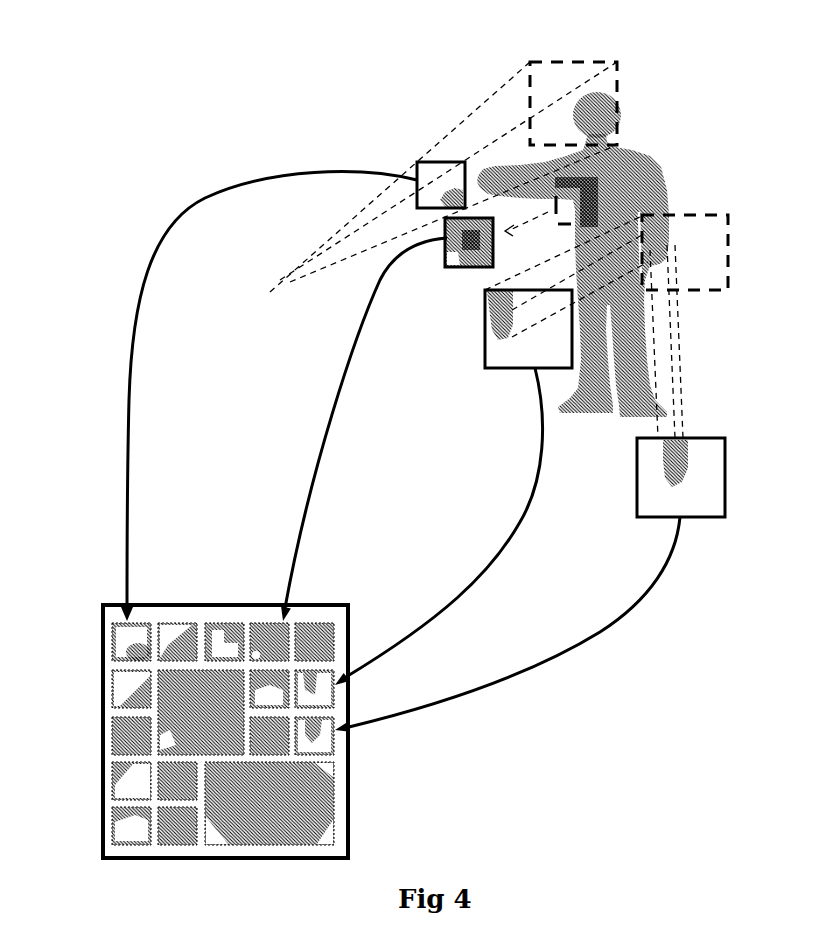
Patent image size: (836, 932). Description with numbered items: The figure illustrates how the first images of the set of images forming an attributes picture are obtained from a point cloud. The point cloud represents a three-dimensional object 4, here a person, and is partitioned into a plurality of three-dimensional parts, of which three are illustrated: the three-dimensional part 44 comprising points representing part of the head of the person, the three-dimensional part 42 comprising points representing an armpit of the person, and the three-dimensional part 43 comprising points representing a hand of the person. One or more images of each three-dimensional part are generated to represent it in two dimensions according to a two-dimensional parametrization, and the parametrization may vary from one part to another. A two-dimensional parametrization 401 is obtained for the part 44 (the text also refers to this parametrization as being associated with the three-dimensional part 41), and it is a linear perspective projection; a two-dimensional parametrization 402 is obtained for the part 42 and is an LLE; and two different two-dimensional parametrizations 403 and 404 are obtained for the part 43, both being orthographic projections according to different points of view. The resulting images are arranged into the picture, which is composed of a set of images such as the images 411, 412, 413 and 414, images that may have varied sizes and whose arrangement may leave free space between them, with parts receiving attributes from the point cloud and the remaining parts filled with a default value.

The 3D object 4 is at (645, 158).
The 3D part 41 is at (249, 684).
The first grid cell 411 is at (115, 630).
The second grid cell 412 is at (263, 626).
The third grid cell 413 is at (338, 668).
The fourth grid cell 414 is at (350, 737).
The 3D part 42 is at (580, 179).
The 3D part 43 is at (713, 290).
The 3D part 44 is at (600, 65).
The 2D parametrization 401 is at (417, 180).
The 2D parametrization 402 is at (463, 267).
The 2D parametrization 403 is at (503, 368).
The 2D parametrization 404 is at (707, 517).